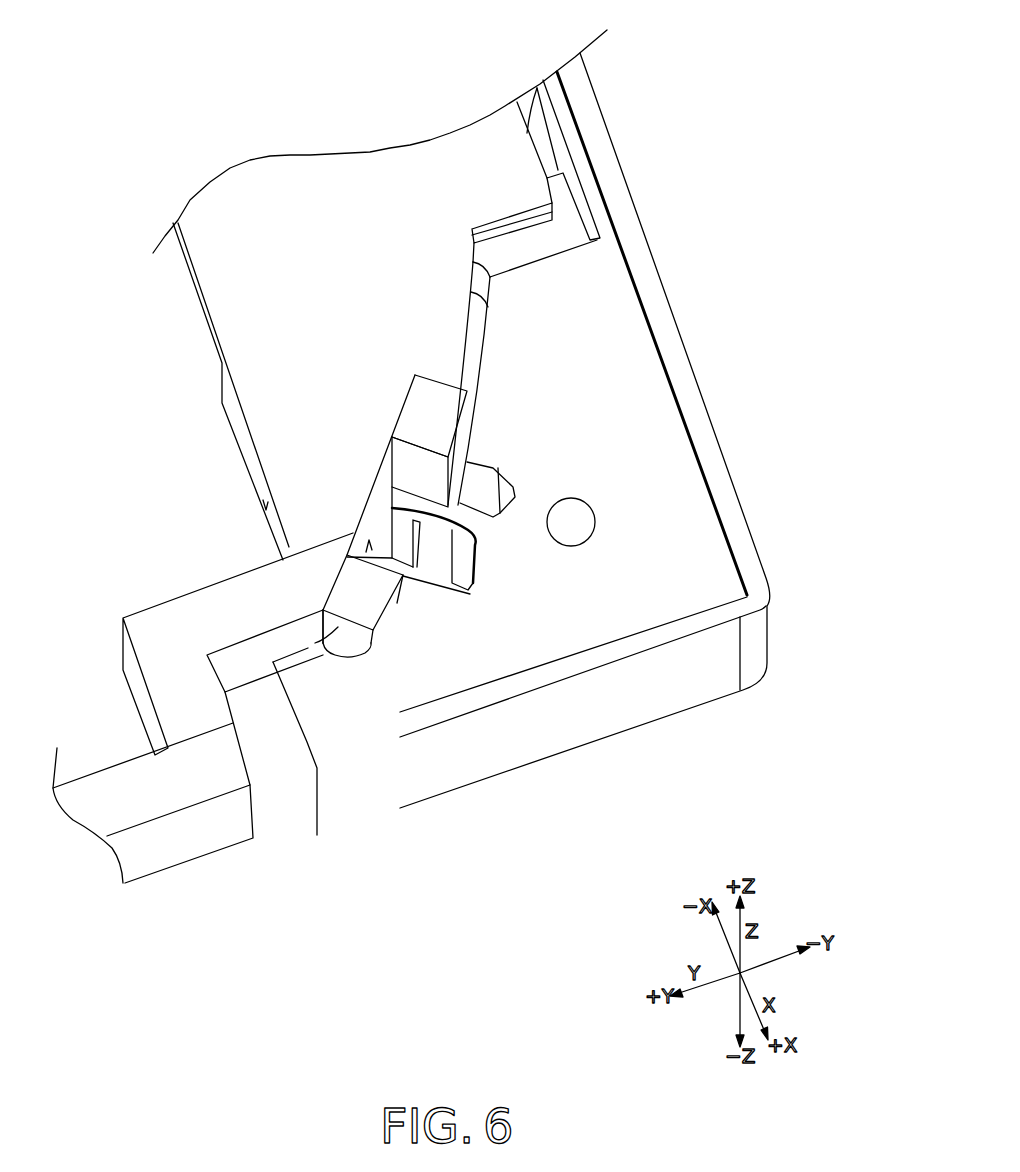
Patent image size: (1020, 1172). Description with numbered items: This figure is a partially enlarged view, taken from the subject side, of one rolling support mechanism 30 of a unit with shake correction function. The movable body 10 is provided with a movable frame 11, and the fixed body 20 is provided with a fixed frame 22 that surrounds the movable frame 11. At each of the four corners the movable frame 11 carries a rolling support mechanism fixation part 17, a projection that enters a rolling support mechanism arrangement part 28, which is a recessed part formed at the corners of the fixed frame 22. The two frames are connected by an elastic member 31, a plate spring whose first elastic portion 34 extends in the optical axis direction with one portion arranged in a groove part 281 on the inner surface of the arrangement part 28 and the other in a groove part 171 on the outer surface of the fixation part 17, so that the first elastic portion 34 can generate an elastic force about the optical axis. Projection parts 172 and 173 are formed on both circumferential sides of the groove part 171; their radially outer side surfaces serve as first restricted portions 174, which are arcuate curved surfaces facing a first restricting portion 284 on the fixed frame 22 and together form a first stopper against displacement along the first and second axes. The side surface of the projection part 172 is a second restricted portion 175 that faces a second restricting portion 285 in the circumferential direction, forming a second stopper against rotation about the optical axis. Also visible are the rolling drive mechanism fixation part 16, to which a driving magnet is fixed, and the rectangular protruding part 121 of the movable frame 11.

The rolling drive mechanism fixation part 16 is at (520, 165).
The first restricted portion 174 is at (460, 430).
The groove part 281 is at (487, 482).
The first elastic portion 34 is at (645, 368).
The elastic member 31 is at (503, 533).
The fixed frame 22 is at (636, 430).
The fixed body 20 is at (727, 487).
The projection part 173 is at (423, 412).
The groove part 171 is at (417, 462).
The projection part 172 is at (348, 588).
The second restricted portion 175 is at (322, 613).
The rolling support mechanism 30 is at (543, 560).
The rolling support mechanism arrangement part 28 is at (482, 596).
The first restricting portion 284 is at (417, 580).
The second restricting portion 285 is at (361, 658).
The rolling support mechanism fixation part 17 is at (436, 632).
The protruding part 121 is at (203, 736).
The movable frame 11 is at (203, 736).
The movable body 10 is at (183, 846).